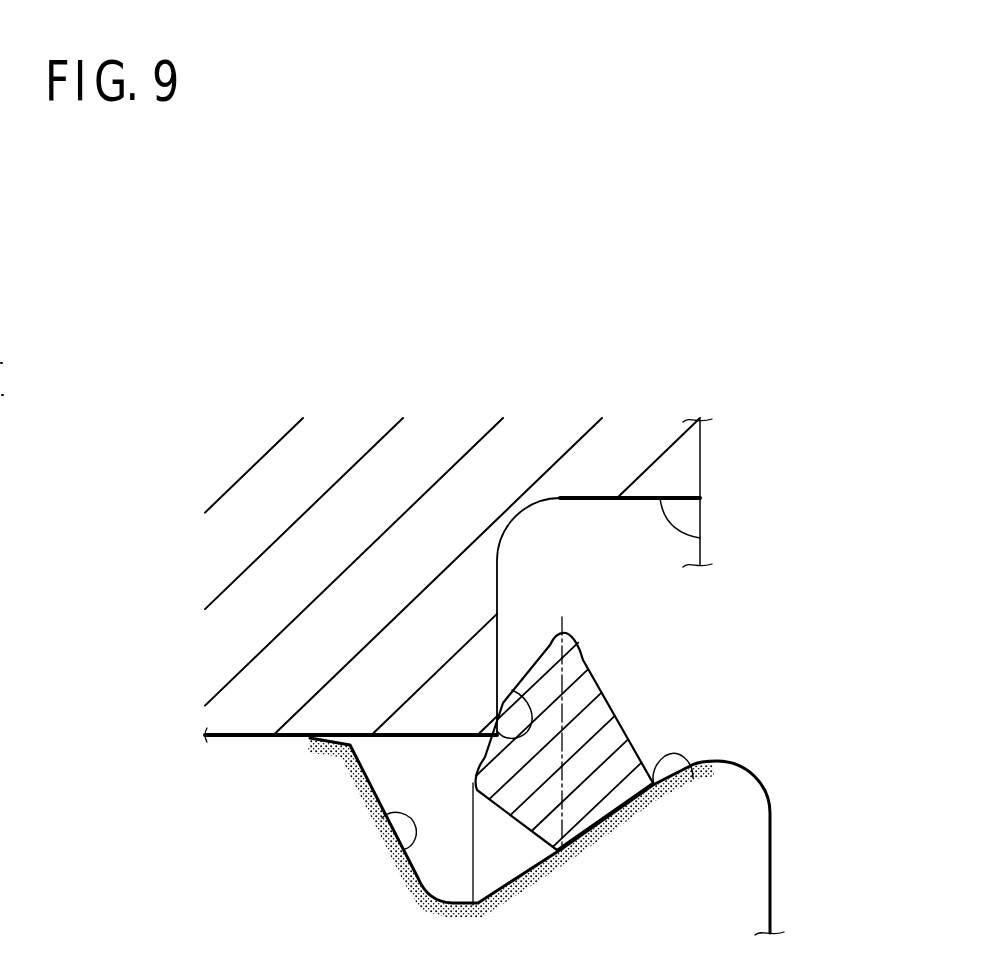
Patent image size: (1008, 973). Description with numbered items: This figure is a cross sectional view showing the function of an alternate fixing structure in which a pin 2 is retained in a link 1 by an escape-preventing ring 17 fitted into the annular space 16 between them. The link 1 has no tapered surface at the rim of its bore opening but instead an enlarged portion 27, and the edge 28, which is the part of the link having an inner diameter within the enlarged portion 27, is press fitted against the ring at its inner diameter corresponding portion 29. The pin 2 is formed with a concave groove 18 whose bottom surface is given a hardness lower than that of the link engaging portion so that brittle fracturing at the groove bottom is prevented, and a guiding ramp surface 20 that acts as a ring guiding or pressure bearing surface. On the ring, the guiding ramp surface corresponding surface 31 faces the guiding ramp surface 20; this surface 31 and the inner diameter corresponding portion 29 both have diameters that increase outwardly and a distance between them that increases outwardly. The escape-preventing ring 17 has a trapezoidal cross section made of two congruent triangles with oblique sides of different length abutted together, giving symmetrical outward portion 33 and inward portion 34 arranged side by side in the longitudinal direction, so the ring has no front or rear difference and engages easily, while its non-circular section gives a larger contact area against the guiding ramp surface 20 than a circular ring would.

The link 1 is at (706, 442).
The pin 2 is at (775, 850).
The annular space 16 is at (709, 618).
The escape-preventing ring 17 is at (615, 706).
The concave groove 18 is at (382, 818).
The guiding ramp surface 20 is at (693, 778).
The enlarged portion 27 is at (700, 538).
The edge 28 is at (512, 690).
The inner diameter corresponding portion 29 is at (533, 668).
The guiding ramp surface corresponding surface 31 is at (588, 833).
The outward portion 33 is at (585, 661).
The inward portion 34 is at (513, 807).